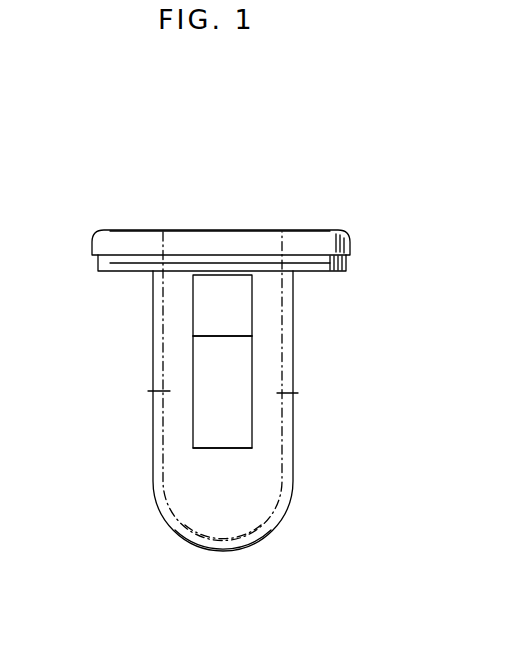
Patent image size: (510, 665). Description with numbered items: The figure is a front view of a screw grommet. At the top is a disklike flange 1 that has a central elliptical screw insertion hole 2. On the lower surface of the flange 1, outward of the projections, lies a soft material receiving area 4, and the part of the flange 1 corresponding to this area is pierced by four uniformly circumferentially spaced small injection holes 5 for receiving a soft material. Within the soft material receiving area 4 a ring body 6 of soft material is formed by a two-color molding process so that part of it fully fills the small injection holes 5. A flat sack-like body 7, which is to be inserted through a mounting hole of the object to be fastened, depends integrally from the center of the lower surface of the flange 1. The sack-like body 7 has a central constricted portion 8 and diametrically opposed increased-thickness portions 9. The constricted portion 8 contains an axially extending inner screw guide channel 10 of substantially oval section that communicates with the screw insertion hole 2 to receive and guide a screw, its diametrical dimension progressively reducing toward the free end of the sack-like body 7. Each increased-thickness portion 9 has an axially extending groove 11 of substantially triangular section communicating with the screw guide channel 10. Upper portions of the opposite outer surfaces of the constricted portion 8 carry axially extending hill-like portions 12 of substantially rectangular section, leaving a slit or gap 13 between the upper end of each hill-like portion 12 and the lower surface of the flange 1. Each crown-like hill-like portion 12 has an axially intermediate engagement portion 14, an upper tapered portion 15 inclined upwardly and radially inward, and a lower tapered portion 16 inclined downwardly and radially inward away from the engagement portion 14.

The disklike flange 1 is at (120, 229).
The screw insertion hole 2 is at (225, 241).
The soft material receiving area 4 is at (333, 272).
The small injection holes 5 is at (222, 160).
The ring body 6 is at (118, 262).
The sack-like body 7 is at (152, 435).
The constricted portion 8 is at (205, 520).
The increased-thickness portions 9 is at (158, 473).
The screw guide channel 10 is at (248, 517).
The groove 11 is at (170, 392).
The hill-like portions 12 is at (204, 423).
The slit or gap 13 is at (243, 268).
The engagement portion 14 is at (240, 336).
The upper tapered portion 15 is at (203, 285).
The lower tapered portion 16 is at (235, 416).